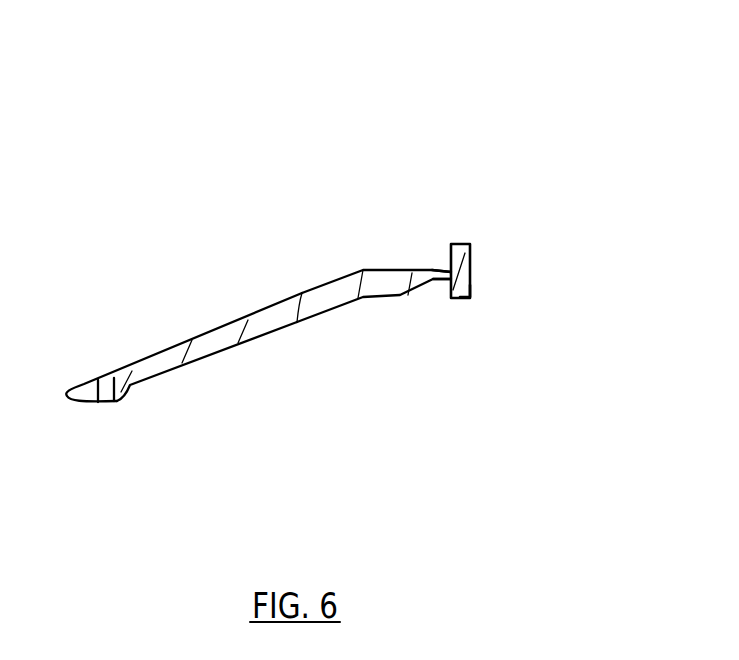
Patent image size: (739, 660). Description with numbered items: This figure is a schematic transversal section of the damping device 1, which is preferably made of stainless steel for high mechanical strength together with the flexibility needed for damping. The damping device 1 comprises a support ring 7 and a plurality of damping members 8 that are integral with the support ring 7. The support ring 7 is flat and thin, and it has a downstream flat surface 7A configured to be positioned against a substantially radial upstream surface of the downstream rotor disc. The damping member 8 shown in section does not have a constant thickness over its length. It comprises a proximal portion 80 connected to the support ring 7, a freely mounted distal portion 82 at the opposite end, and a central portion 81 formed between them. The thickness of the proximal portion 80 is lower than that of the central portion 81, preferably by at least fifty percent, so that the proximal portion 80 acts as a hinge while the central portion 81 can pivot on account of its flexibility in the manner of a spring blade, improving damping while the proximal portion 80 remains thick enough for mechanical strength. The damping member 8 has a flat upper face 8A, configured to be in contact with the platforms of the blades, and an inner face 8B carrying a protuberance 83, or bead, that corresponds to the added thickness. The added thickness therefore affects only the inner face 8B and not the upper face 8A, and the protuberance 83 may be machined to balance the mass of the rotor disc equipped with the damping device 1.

The damping device 1 is at (467, 206).
The support ring 7 is at (471, 273).
The downstream flat surface 7A is at (478, 301).
The damping member 8 is at (32, 257).
The flat upper face 8A is at (208, 302).
The inner face 8B is at (231, 361).
The proximal portion 80 is at (434, 266).
The central portion 81 is at (297, 289).
The distal portion 82 is at (85, 364).
The protuberance 83 is at (114, 384).